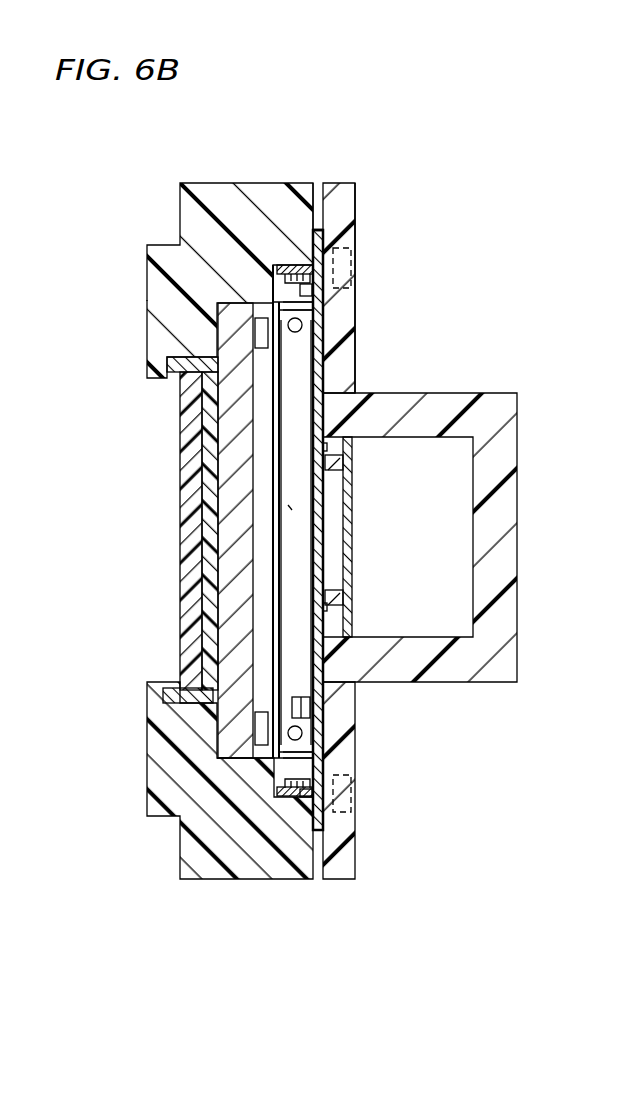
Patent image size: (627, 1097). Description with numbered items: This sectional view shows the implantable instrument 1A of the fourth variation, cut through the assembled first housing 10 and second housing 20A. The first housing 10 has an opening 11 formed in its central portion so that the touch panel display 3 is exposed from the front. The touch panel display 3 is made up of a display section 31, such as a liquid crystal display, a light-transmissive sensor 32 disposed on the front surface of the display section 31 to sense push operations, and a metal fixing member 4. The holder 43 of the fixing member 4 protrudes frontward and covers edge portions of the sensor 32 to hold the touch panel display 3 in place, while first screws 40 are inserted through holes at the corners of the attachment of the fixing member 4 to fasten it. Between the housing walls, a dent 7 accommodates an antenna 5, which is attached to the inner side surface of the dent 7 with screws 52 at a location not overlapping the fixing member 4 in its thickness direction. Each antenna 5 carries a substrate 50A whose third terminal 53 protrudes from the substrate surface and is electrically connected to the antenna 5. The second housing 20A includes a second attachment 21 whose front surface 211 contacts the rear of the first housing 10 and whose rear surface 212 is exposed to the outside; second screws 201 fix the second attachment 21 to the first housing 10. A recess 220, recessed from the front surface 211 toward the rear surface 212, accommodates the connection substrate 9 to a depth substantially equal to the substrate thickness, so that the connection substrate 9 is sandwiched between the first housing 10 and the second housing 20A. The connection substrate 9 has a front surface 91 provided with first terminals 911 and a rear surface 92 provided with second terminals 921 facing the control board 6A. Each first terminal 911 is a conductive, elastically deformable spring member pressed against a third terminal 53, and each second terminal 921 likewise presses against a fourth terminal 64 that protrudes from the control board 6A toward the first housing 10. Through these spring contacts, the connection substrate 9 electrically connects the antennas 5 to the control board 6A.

The implantable instrument 1A is at (131, 185).
The first housing 10 is at (193, 181).
The second housing 20A is at (520, 470).
The second attachment 21 is at (356, 184).
The front surface 211 is at (301, 182).
The rear surface 212 is at (356, 212).
The recess 220 is at (312, 242).
The second screw 201 is at (352, 260).
The substrate 50A is at (312, 262).
The antenna 5 is at (276, 268).
The control board 6A is at (352, 522).
The fourth terminal 64 is at (343, 462).
The dent 7 is at (288, 281).
The connection substrate 9 is at (312, 427).
The front surface 91 is at (300, 562).
The rear surface 92 is at (323, 572).
The first terminal 911 is at (311, 290).
The second terminal 921 is at (324, 447).
The screw 52 is at (302, 327).
The third terminal 53 is at (300, 304).
The first screw 40 is at (256, 330).
The holder 43 is at (180, 362).
The opening 11 is at (168, 690).
The fixing member 4 is at (240, 488).
The touch panel display 3 is at (154, 531).
The sensor 32 is at (192, 523).
The display section 31 is at (210, 560).